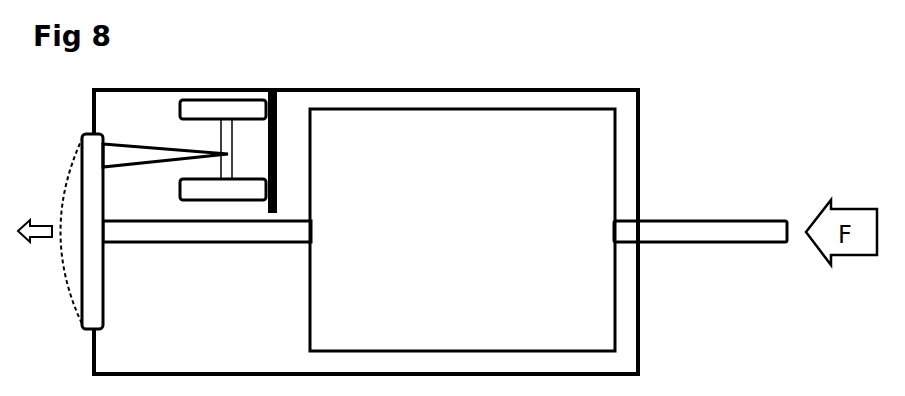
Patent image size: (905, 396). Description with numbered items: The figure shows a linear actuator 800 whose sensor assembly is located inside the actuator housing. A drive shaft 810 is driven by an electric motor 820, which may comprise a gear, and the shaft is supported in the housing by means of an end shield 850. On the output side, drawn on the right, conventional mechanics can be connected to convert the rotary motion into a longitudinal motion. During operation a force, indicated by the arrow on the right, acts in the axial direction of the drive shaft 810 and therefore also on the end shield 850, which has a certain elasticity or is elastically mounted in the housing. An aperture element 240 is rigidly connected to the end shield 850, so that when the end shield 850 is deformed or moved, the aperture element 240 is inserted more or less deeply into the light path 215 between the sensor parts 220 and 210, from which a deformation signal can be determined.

The linear actuator 800 is at (640, 133).
The drive shaft 810 is at (707, 218).
The electric motor 820 is at (497, 142).
The end shield 850 is at (105, 288).
The upper guide bar 220 is at (196, 111).
The lower guide bar 210 is at (196, 195).
The light path 215 is at (230, 147).
The aperture element 240 is at (165, 143).